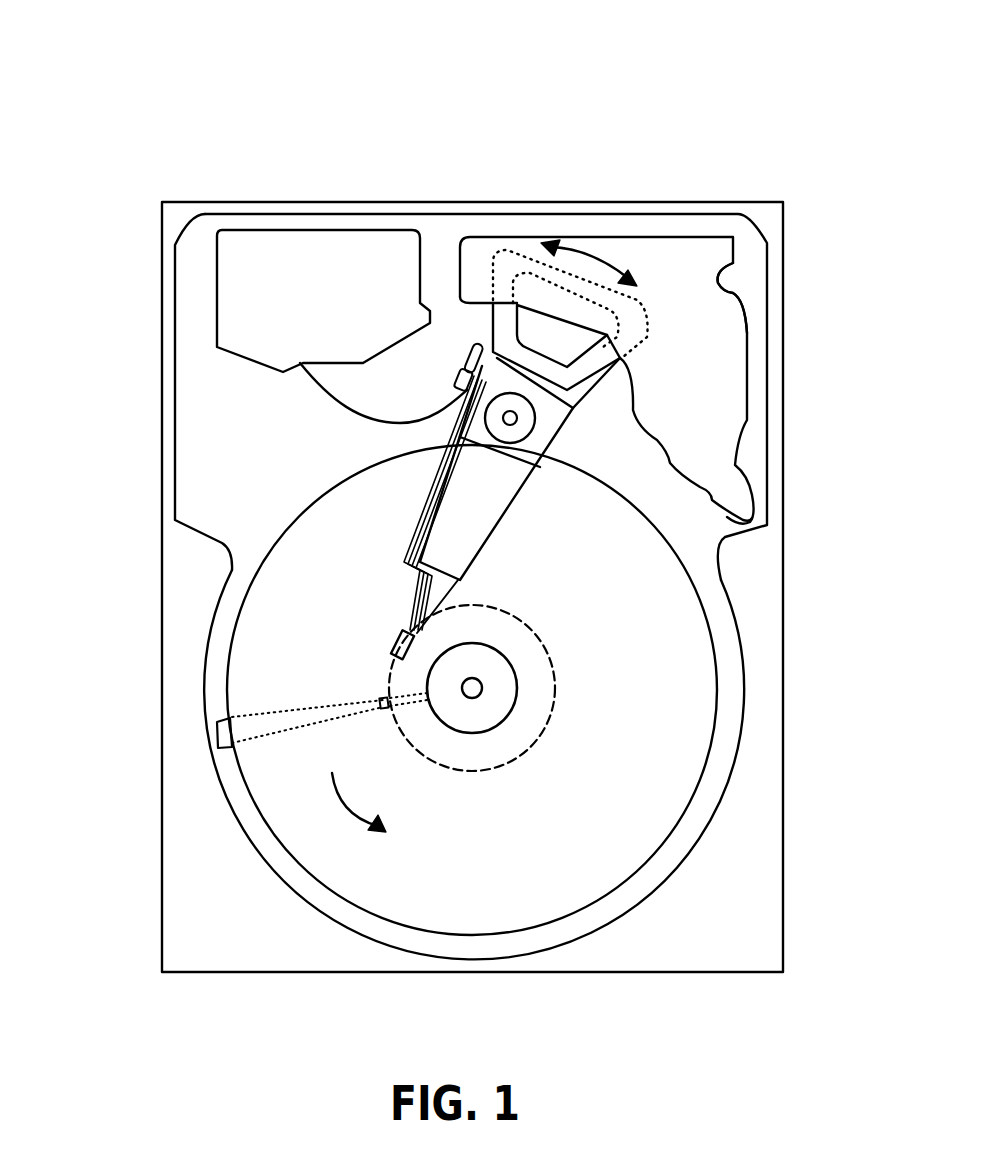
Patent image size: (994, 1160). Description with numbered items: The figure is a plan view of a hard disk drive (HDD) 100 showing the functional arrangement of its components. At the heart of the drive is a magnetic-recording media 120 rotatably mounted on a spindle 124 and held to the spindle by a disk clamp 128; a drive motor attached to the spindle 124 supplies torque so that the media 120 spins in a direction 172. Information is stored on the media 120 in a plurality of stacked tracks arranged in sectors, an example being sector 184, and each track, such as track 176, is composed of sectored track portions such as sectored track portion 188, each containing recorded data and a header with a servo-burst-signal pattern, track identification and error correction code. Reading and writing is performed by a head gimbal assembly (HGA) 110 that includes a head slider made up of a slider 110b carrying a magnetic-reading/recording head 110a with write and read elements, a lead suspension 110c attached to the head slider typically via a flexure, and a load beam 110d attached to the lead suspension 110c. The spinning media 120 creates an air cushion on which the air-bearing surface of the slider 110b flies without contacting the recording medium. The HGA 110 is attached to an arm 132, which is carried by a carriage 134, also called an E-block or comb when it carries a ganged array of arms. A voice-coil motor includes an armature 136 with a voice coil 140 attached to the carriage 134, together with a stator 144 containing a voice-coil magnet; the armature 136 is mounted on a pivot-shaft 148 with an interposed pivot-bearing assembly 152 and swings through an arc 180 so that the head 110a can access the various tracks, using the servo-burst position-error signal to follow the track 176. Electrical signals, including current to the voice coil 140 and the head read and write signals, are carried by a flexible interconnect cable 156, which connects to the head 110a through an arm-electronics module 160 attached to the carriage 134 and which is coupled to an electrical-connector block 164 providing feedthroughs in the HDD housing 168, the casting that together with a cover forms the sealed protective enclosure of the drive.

The hard disk drive 100 is at (92, 82).
The head gimbal assembly 110 is at (258, 518).
The magnetic-reading/recording head 110a is at (385, 660).
The slider 110b is at (405, 630).
The lead suspension 110c is at (410, 597).
The load beam 110d is at (403, 563).
The magnetic-recording media 120 is at (648, 642).
The spindle 124 is at (478, 688).
The disk clamp 128 is at (497, 705).
The arm 132 is at (465, 530).
The carriage 134 is at (527, 453).
The armature 136 is at (489, 340).
The voice coil 140 is at (505, 313).
The stator 144 is at (713, 325).
The pivot-shaft 148 is at (517, 418).
The pivot-bearing assembly 152 is at (522, 437).
The flexible interconnect cable 156 is at (337, 396).
The arm-electronics module 160 is at (467, 385).
The electrical-connector block 164 is at (240, 300).
The HDD housing 168 is at (762, 214).
The direction 172 is at (363, 807).
The track 176 is at (545, 652).
The arc 180 is at (590, 250).
The sector 184 is at (210, 733).
The sectored track portion 188 is at (383, 700).